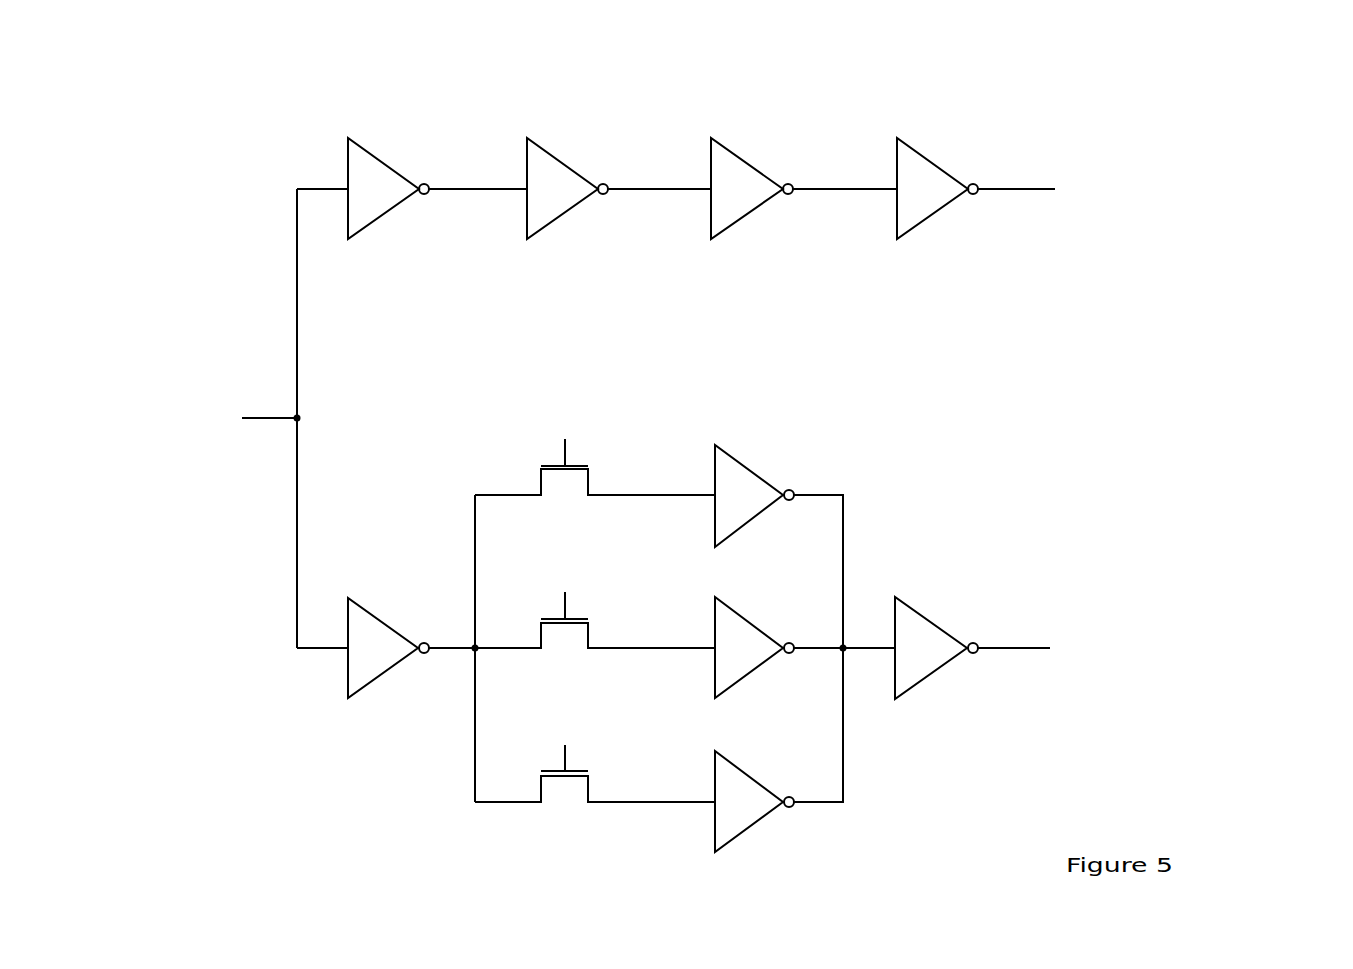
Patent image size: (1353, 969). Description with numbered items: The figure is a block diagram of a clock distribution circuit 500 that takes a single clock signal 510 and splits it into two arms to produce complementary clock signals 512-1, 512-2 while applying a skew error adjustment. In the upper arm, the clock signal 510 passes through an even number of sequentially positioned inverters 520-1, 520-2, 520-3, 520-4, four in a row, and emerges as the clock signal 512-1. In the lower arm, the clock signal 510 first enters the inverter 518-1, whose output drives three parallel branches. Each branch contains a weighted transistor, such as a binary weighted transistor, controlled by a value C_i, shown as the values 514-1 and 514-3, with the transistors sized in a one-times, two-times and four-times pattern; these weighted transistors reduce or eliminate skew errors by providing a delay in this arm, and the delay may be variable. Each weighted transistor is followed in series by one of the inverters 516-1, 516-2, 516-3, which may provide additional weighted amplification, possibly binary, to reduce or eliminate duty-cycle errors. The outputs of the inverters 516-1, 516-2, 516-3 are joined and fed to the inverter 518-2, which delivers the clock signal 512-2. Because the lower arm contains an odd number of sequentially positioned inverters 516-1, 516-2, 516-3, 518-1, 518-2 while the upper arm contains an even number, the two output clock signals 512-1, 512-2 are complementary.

The clock distribution circuit 500 is at (1223, 105).
The clock signal 510 is at (238, 418).
The clock signal 512-1 is at (1080, 183).
The clock signal 512-2 is at (1080, 643).
The value C_i 514-1 is at (595, 518).
The value C_i 514-3 is at (595, 749).
The inverter 516-1 is at (752, 468).
The inverter 516-2 is at (752, 620).
The inverter 516-3 is at (752, 773).
The inverter 518-1 is at (363, 605).
The inverter 518-2 is at (924, 612).
The inverter 520-1 is at (374, 153).
The inverter 520-2 is at (554, 153).
The inverter 520-3 is at (738, 153).
The inverter 520-4 is at (924, 153).